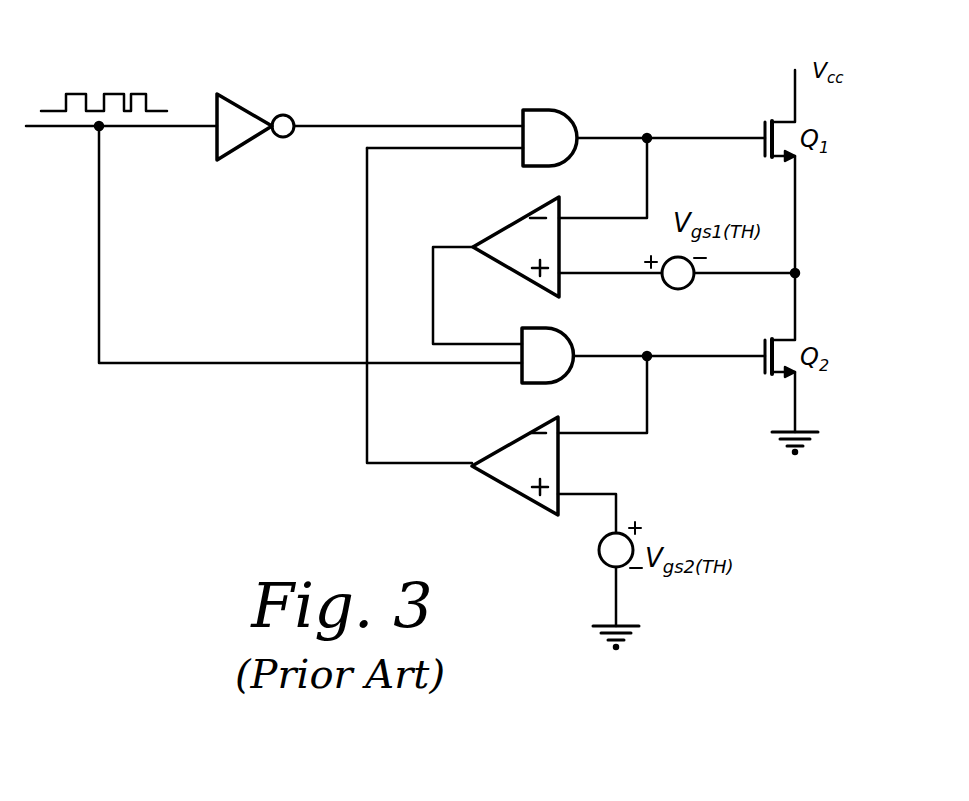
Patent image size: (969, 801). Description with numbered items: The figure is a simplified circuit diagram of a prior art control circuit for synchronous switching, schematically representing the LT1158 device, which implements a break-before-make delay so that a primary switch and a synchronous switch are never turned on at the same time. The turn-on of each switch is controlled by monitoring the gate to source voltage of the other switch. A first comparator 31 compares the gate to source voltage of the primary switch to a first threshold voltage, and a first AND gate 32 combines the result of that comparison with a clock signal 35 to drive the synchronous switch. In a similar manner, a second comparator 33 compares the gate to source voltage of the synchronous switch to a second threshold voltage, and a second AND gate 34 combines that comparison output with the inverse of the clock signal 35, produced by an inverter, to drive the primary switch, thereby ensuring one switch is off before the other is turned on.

The first comparator 31 is at (521, 214).
The first AND gate 32 is at (566, 338).
The second comparator 33 is at (522, 424).
The second AND gate 34 is at (546, 108).
The clock signal 35 is at (84, 92).